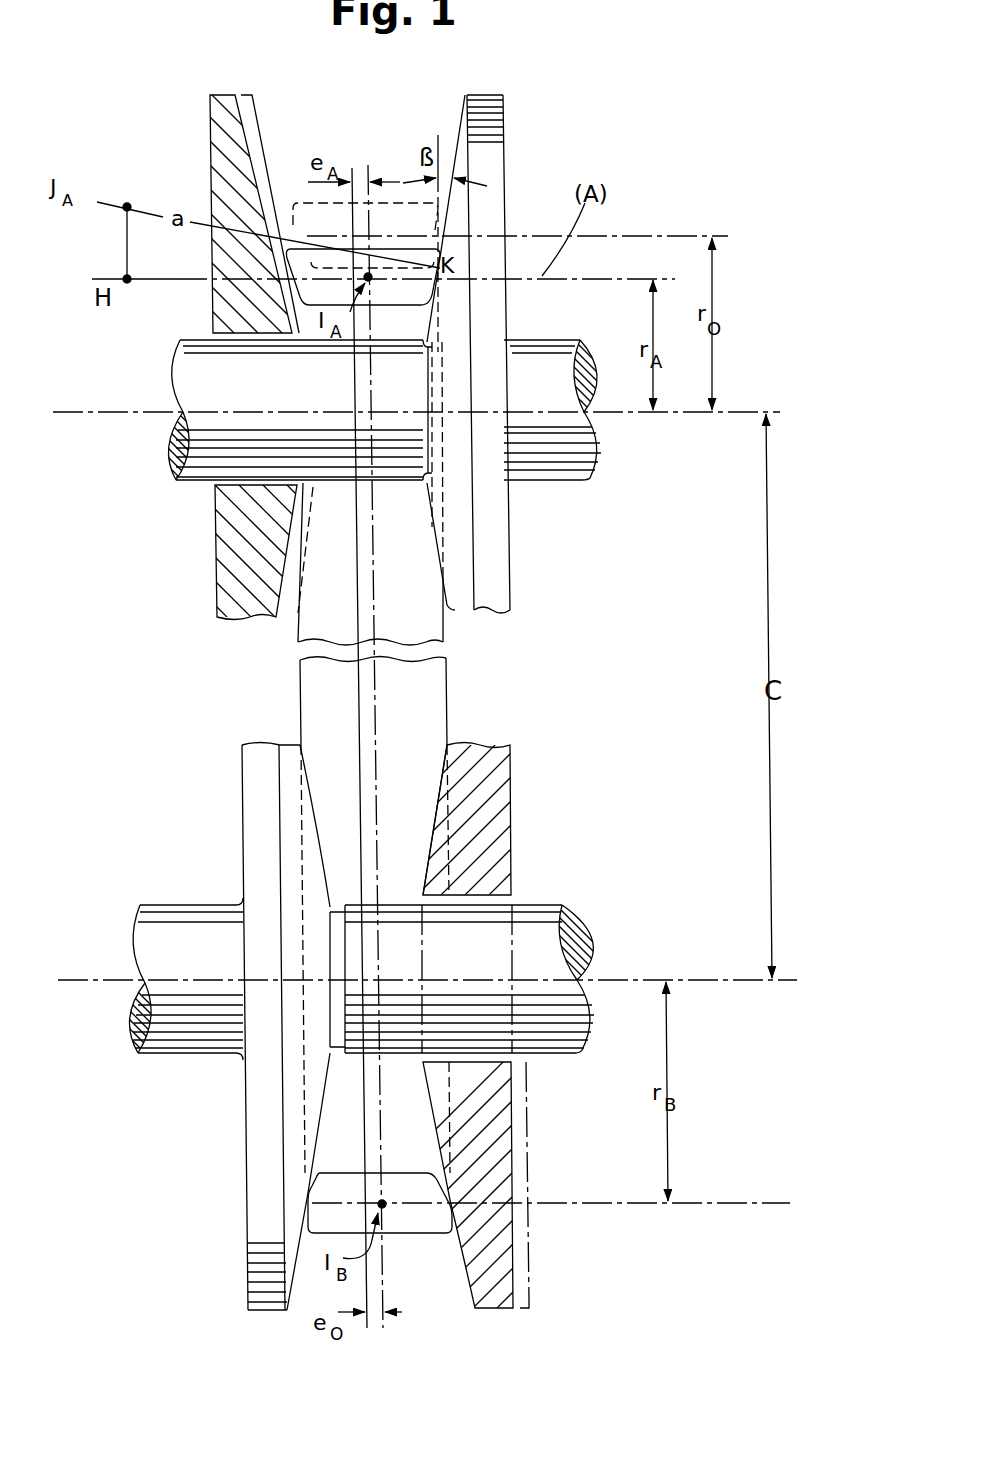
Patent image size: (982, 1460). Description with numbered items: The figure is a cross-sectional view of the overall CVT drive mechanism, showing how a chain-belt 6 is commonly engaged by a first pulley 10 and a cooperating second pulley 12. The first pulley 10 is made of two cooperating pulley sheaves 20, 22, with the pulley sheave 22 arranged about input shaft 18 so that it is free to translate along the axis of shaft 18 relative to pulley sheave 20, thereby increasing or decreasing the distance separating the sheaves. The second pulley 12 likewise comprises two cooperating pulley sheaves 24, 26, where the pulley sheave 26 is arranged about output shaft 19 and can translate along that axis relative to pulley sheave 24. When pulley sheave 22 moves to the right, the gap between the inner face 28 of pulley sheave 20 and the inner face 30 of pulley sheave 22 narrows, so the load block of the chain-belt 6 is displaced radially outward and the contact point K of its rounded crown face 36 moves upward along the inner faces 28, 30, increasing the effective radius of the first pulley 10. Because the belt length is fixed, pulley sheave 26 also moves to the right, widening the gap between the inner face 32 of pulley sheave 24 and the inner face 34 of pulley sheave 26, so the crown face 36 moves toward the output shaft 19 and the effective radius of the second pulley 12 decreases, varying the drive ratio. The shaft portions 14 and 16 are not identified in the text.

The chain-belt 6 is at (378, 815).
The first pulley 10 is at (657, 181).
The second pulley 12 is at (188, 1135).
The first pulley shaft 14 is at (567, 479).
The second pulley shaft 16 is at (557, 1043).
The input shaft 18 is at (185, 369).
The output shaft 19 is at (190, 925).
The pulley sheave 20 is at (493, 161).
The pulley sheave 22 is at (209, 98).
The pulley sheave 24 is at (263, 1220).
The pulley sheave 26 is at (505, 1310).
The inner face 28 is at (458, 118).
The inner face 30 is at (268, 183).
The inner face 32 is at (318, 1112).
The inner face 34 is at (472, 1290).
The rounded crown face 36 is at (432, 1200).